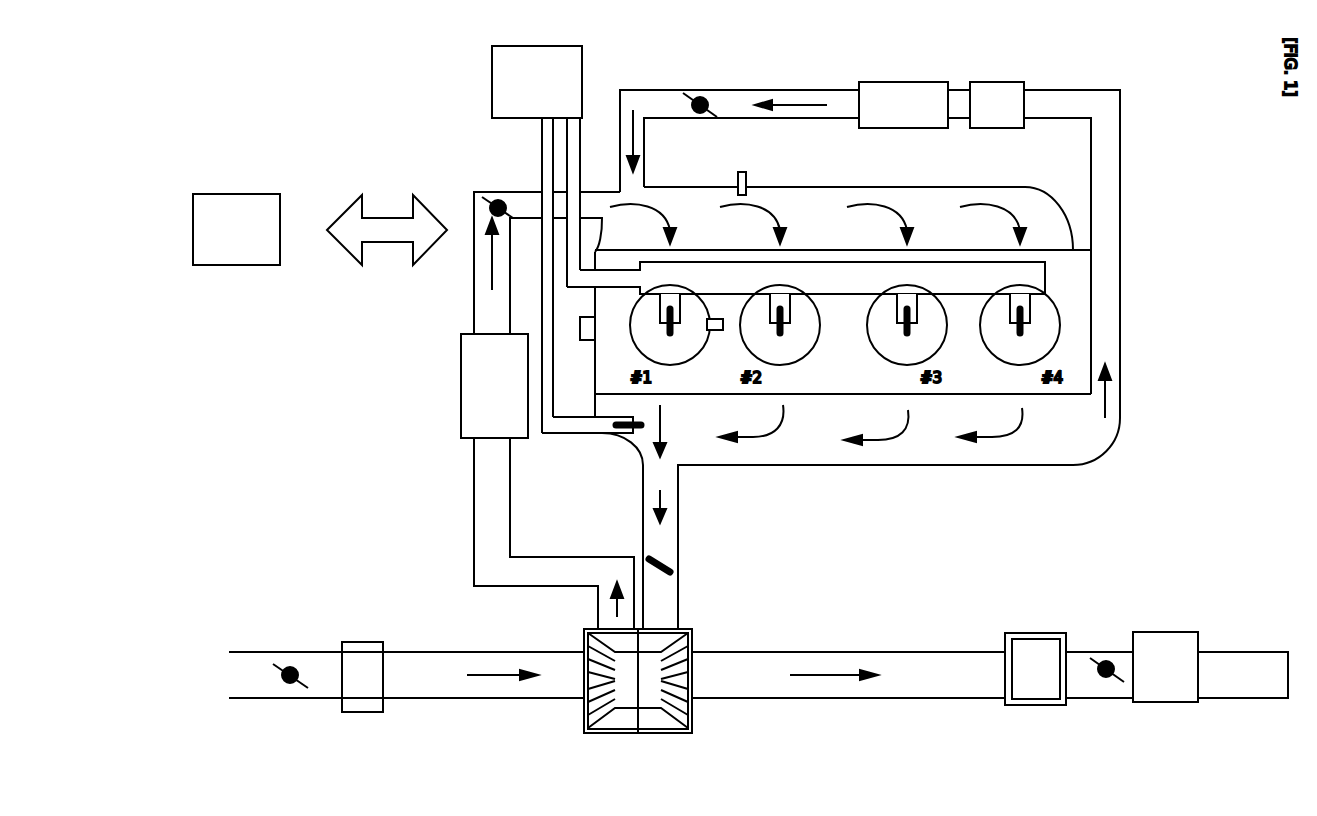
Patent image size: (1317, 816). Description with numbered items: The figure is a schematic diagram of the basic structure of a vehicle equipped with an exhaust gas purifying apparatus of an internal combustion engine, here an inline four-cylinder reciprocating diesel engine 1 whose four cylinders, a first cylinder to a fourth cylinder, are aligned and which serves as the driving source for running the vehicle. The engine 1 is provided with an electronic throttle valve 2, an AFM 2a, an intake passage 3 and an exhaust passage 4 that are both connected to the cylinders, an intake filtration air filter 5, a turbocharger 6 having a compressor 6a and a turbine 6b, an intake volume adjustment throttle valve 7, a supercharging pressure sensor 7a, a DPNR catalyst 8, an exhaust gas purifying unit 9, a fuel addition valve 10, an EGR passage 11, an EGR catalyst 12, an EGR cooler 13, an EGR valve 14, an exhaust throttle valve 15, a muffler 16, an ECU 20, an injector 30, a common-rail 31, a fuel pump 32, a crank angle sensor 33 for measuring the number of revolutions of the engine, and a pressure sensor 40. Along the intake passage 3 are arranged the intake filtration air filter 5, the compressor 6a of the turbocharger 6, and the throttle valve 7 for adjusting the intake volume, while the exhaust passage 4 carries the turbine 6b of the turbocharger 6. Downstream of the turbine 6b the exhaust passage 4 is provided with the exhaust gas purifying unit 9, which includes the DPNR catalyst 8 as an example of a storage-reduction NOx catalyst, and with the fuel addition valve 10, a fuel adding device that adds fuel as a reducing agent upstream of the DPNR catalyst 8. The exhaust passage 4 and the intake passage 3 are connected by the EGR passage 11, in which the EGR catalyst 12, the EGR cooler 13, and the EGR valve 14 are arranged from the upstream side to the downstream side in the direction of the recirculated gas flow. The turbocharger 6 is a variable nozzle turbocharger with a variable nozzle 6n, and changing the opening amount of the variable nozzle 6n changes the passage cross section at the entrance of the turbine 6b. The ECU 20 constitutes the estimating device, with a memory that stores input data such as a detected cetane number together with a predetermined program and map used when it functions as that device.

The engine 1 is at (1147, 92).
The electronic throttle valve 2 is at (292, 670).
The AFM 2a is at (368, 655).
The intake passage 3 is at (487, 545).
The exhaust passage 4 is at (988, 447).
The intake filtration air filter 5 is at (487, 400).
The turbocharger 6 is at (662, 672).
The compressor 6a is at (633, 740).
The turbine 6b is at (643, 740).
The variable nozzle 6n is at (677, 552).
The intake volume adjustment throttle valve 7 is at (500, 200).
The supercharging pressure sensor 7a is at (742, 172).
The DPNR catalyst 8 is at (1027, 650).
The exhaust gas purifying unit 9 is at (1058, 635).
The fuel addition valve 10 is at (605, 424).
The EGR passage 11 is at (1107, 263).
The EGR catalyst 12 is at (1019, 105).
The EGR cooler 13 is at (897, 98).
The EGR valve 14 is at (701, 100).
The exhaust throttle valve 15 is at (1105, 660).
The muffler 16 is at (1158, 640).
The ECU 20 is at (320, 229).
The injector 30 is at (1023, 330).
The common-rail 31 is at (990, 277).
The fuel pump 32 is at (537, 239).
The crank angle sensor 33 is at (580, 323).
The pressure sensor 40 is at (720, 330).